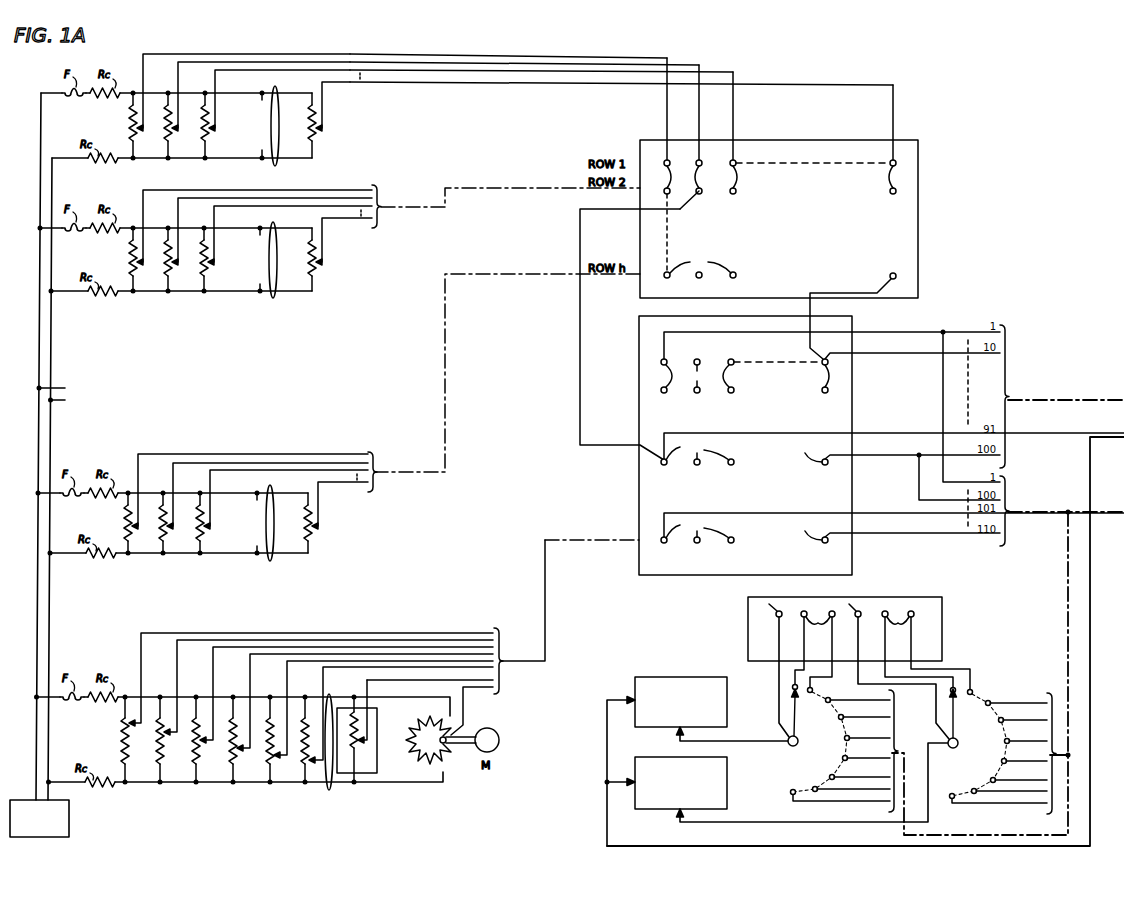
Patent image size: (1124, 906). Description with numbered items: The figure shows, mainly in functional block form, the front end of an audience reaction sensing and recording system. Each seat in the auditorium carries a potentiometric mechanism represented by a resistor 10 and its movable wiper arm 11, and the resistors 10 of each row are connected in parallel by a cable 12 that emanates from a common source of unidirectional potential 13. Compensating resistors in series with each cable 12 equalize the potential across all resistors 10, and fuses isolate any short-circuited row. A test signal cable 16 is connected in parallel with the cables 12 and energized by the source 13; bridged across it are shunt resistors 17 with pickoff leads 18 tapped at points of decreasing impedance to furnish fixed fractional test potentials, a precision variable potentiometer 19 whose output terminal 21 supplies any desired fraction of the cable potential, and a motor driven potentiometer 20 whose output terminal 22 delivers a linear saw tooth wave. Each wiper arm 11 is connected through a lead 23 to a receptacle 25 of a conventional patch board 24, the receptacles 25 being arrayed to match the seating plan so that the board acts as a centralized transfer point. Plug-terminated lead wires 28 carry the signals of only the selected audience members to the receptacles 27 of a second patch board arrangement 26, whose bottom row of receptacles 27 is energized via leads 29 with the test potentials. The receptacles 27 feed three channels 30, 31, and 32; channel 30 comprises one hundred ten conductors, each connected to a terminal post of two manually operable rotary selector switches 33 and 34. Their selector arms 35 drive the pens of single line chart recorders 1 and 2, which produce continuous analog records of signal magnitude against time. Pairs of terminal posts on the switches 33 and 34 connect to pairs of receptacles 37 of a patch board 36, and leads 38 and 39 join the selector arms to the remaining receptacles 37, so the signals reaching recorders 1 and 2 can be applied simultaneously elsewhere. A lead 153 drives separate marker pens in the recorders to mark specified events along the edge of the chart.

The single line chart recorder 1 is at (659, 674).
The single line chart recorder 2 is at (659, 756).
The resistor 10 is at (308, 143).
The wiper arm 11 is at (328, 503).
The cable 12 is at (273, 168).
The source of unidirectional potential 13 is at (72, 821).
The test signal cable 16 is at (329, 791).
The shunt resistor 17 is at (302, 765).
The pickoff lead 18 is at (330, 684).
The precision variable potentiometer 19 is at (379, 764).
The motor driven potentiometer 20 is at (446, 748).
The output terminal 21 is at (375, 688).
The output terminal 22 is at (468, 709).
The lead 23 is at (357, 72).
The patch board 24 is at (918, 223).
The receptacle 25 is at (892, 274).
The second patch board arrangement 26 is at (638, 490).
The receptacle 27 is at (745, 451).
The lead wire 28 is at (822, 292).
The lead 29 is at (458, 656).
The channel 30 is at (1068, 612).
The channel 31 is at (1075, 511).
The channel 32 is at (1028, 402).
The rotary selector switch 33 is at (821, 764).
The rotary selector switch 34 is at (981, 764).
The selector arm 35 is at (798, 724).
The patch board 36 is at (748, 620).
The receptacle 37 is at (857, 626).
The lead 38 is at (779, 686).
The lead 39 is at (868, 684).
The lead 153 is at (1090, 454).